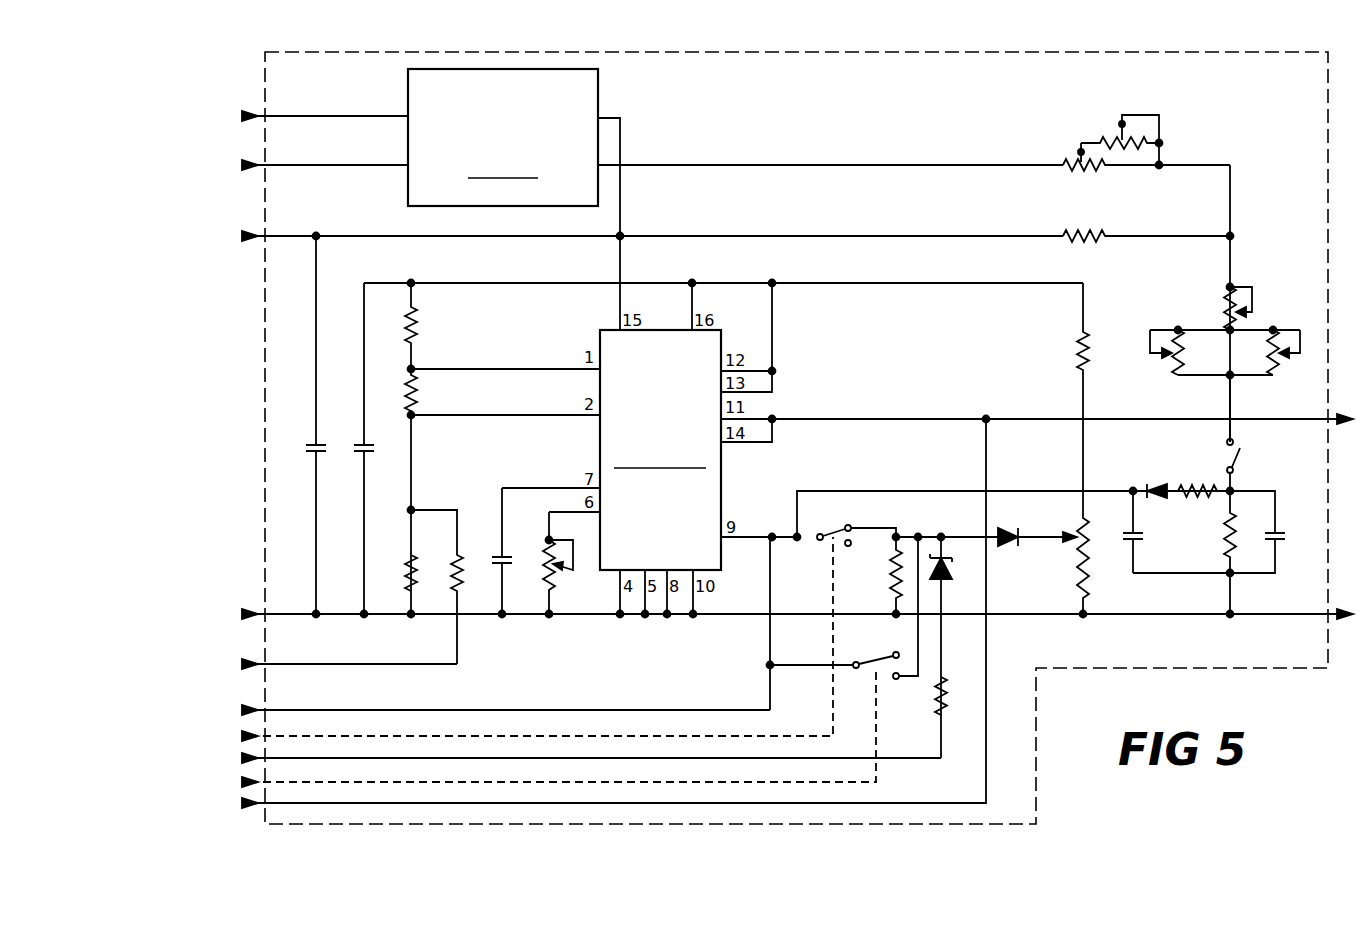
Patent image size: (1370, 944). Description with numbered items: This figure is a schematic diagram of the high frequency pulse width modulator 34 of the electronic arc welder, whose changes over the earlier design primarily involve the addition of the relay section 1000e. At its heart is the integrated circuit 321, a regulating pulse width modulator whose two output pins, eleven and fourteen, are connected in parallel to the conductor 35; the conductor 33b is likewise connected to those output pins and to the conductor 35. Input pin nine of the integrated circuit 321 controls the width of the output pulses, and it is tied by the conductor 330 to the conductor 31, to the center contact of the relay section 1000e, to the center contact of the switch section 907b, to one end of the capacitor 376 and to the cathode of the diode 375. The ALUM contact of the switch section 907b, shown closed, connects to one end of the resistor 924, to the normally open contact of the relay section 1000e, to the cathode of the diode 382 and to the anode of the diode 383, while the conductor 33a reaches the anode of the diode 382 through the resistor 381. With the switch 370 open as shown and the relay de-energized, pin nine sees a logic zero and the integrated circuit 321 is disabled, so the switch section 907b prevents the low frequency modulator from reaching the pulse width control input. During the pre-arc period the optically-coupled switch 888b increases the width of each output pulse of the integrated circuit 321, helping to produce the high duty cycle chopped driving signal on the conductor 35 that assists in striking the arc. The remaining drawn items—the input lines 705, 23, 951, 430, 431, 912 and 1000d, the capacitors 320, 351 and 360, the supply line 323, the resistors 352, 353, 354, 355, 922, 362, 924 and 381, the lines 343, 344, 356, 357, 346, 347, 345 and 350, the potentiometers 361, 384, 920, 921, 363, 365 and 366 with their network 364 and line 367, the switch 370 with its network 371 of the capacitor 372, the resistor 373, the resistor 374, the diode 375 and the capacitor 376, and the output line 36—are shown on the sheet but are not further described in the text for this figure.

The high frequency pulse width modulator 34 is at (265, 78).
The input line 705 is at (262, 118).
The 80v return line 23 is at (262, 167).
The switched +80v line 951 is at (262, 238).
The optically-coupled switch 888b is at (598, 84).
The capacitor 320 is at (306, 446).
The capacitor 351 is at (354, 446).
The supply line 323 is at (705, 283).
The resistor 352 is at (418, 330).
The resistor 353 is at (418, 405).
The line to pin 1 343 is at (483, 369).
The line to pin 2 344 is at (476, 415).
The resistor 354 is at (402, 567).
The resistor 355 is at (448, 567).
The line to pin 7 356 is at (512, 488).
The line to pin 6 357 is at (540, 522).
The capacitor 360 is at (492, 558).
The potentiometer 361 is at (541, 568).
The integrated circuit 321 is at (721, 334).
The pin 4 line 346 is at (615, 600).
The pin 5 line 347 is at (641, 605).
The pin 8 line 345 is at (670, 605).
The pin 10 line 350 is at (695, 606).
The conductor 330 is at (742, 537).
The switch section 907b is at (828, 529).
The resistor 924 is at (890, 586).
The relay section 1000e is at (882, 660).
The diode 382 is at (945, 580).
The resistor 381 is at (945, 677).
The diode 383 is at (999, 547).
The resistor 922 is at (1072, 346).
The potentiometer 384 is at (1075, 558).
The potentiometer 920 is at (1097, 170).
The potentiometer 921 is at (1114, 136).
The resistor 362 is at (1102, 228).
The potentiometer 363 is at (1222, 306).
The potentiometer network 364 is at (1213, 345).
The potentiometer 365 is at (1172, 367).
The potentiometer 366 is at (1266, 353).
The line 367 is at (1232, 404).
The conductor 35 is at (1332, 416).
The switch 370 is at (1238, 460).
The RC network 371 is at (1224, 539).
The capacitor 372 is at (1286, 537).
The resistor 373 is at (1222, 532).
The resistor 374 is at (1200, 484).
The diode 375 is at (1160, 500).
The capacitor 376 is at (1118, 540).
The output line 36 is at (1332, 612).
The +66.7v supply line 430 is at (246, 609).
The +1v supply line 431 is at (248, 660).
The conductor 31 is at (238, 707).
The input line 912 is at (238, 734).
The conductor 33a is at (238, 758).
The input line 1000d is at (240, 783).
The conductor 33b is at (238, 805).